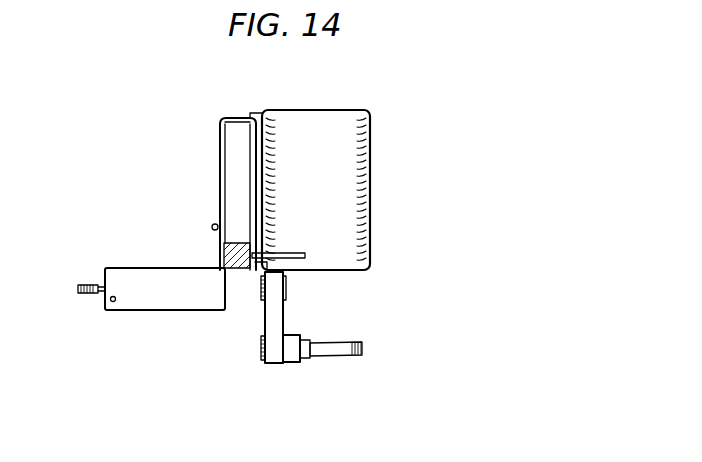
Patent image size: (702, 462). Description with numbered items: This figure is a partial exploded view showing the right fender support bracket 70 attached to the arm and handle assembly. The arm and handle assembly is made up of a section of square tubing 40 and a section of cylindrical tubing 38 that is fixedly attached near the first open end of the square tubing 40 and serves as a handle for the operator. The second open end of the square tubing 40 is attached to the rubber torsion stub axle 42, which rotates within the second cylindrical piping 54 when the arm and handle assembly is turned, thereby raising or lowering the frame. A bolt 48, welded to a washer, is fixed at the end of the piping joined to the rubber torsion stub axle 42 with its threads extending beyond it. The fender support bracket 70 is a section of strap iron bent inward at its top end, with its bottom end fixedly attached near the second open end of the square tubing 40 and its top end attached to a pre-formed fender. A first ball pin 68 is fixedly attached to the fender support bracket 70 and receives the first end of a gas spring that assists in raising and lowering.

The cylindrical tubing 38 is at (295, 263).
The square tubing 40 is at (240, 258).
The rubber torsion stub axle 42 is at (273, 318).
The bolt 48 is at (78, 290).
The second cylindrical piping 54 is at (160, 292).
The first ball pin 68 is at (211, 229).
The fender support bracket 70 is at (218, 165).